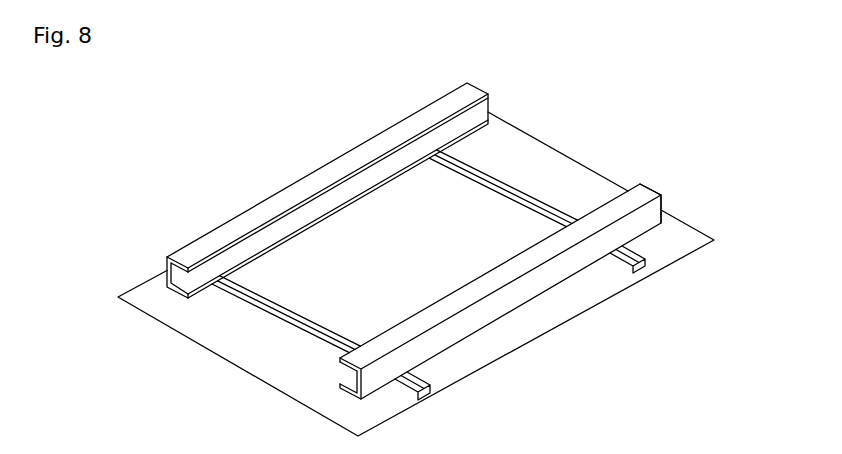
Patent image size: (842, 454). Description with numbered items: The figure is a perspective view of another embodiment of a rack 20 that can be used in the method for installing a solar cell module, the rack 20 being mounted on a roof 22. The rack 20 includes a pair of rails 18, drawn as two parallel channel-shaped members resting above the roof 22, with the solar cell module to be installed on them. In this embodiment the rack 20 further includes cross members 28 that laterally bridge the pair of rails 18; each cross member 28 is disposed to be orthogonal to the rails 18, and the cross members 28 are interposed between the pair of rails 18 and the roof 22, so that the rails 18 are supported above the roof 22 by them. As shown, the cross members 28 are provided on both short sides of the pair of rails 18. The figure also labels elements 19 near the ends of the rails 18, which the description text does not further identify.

The rails 18 is at (268, 199).
The connecting rods 19 is at (200, 273).
The rack 20 is at (645, 191).
The roof 22 is at (673, 240).
The cross members 28 is at (433, 393).